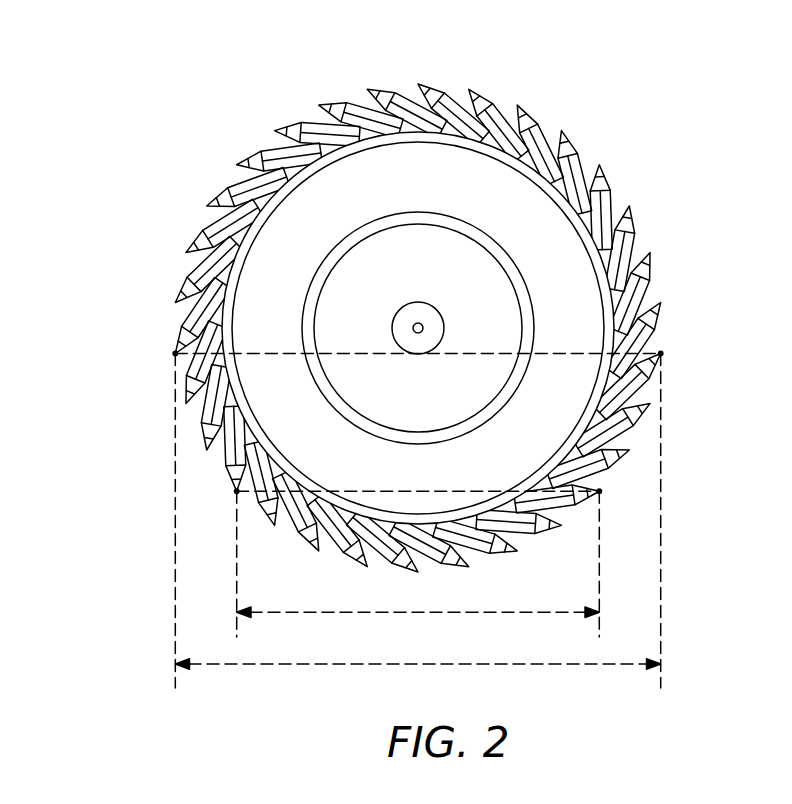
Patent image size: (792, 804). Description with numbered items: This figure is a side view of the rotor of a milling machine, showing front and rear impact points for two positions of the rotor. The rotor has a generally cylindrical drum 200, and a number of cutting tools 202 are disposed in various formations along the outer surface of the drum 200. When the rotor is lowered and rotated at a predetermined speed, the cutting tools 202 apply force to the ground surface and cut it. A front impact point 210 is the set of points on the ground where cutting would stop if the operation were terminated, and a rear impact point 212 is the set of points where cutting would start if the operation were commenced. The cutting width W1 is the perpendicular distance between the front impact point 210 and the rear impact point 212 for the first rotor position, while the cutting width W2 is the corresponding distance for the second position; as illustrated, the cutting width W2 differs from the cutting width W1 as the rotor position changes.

The drum 200 is at (517, 132).
The cutting tools 202 is at (385, 88).
The front impact point 210 is at (661, 354).
The rear impact point 212 is at (174, 354).
The cutting width in first position W1 is at (418, 603).
The cutting width in second position W2 is at (417, 655).